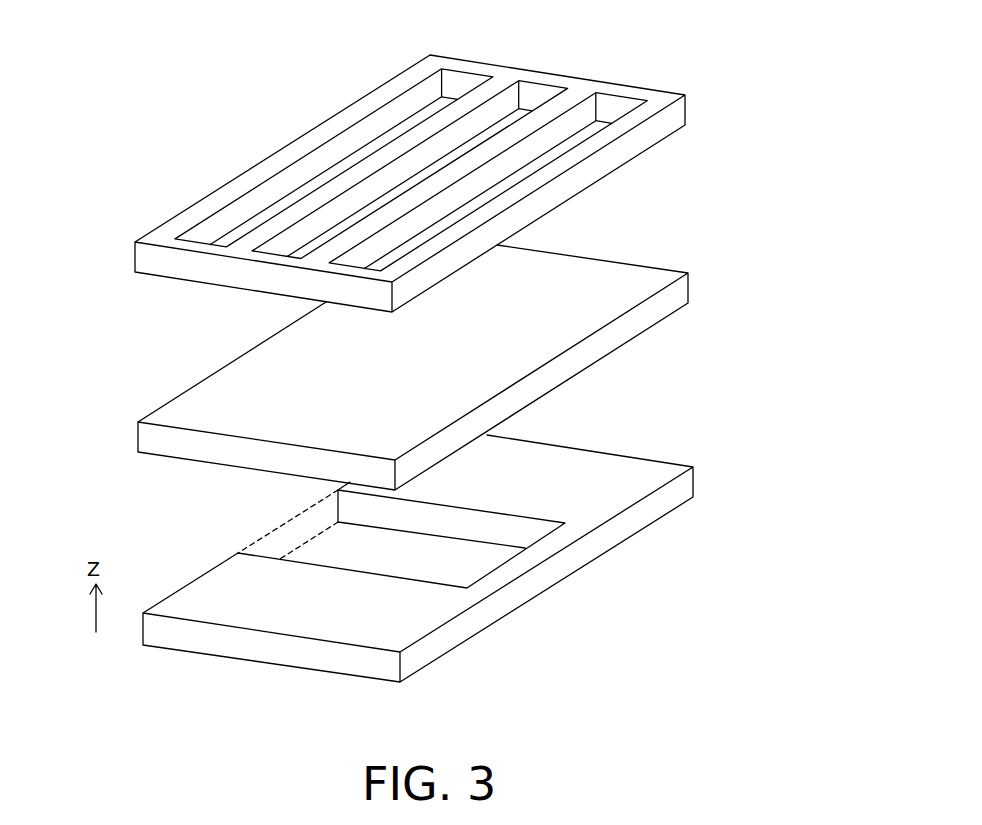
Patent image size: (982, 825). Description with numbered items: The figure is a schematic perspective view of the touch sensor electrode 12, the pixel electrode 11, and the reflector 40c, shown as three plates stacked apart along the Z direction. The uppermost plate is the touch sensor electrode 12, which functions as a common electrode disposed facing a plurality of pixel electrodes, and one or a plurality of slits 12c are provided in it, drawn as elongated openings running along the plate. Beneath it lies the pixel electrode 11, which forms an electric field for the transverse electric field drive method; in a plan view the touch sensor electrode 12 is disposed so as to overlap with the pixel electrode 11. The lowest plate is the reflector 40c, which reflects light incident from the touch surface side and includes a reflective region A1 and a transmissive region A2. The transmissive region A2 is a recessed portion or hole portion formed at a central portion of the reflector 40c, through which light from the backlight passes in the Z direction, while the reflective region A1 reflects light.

The touch sensor electrode 12 is at (578, 85).
The slit 12c is at (537, 93).
The pixel electrode 11 is at (585, 277).
The reflector 40c is at (617, 483).
The reflective region A1 is at (580, 462).
The transmissive region A2 is at (361, 518).